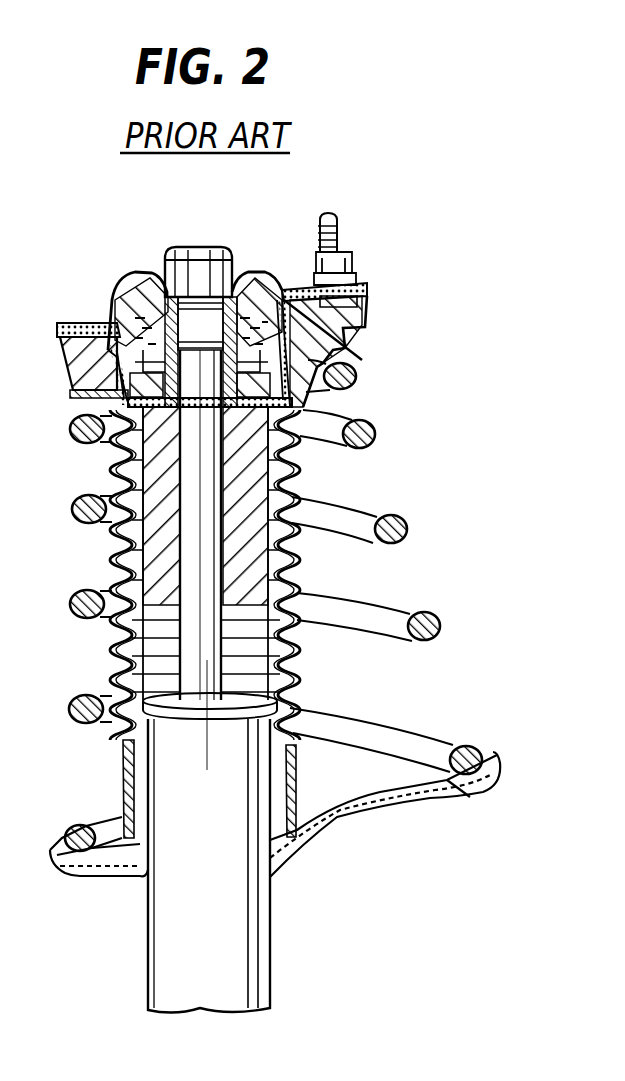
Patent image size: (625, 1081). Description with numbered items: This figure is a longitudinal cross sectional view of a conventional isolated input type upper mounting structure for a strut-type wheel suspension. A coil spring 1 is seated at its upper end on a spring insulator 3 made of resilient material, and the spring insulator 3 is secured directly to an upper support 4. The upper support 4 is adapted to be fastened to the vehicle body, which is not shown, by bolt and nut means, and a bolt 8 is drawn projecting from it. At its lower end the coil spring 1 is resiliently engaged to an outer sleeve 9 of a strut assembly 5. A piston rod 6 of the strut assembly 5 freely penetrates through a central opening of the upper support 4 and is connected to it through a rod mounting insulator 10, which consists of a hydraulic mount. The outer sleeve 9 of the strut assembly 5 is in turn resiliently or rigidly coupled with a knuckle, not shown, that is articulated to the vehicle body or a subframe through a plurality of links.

The coil spring 1 is at (372, 424).
The spring insulator 3 is at (343, 330).
The upper support 4 is at (360, 283).
The strut assembly 5 is at (274, 933).
The piston rod 6 is at (292, 670).
The mounting bolt 8 is at (334, 236).
The outer sleeve 9 is at (165, 933).
The rod mounting insulator 10 is at (108, 302).